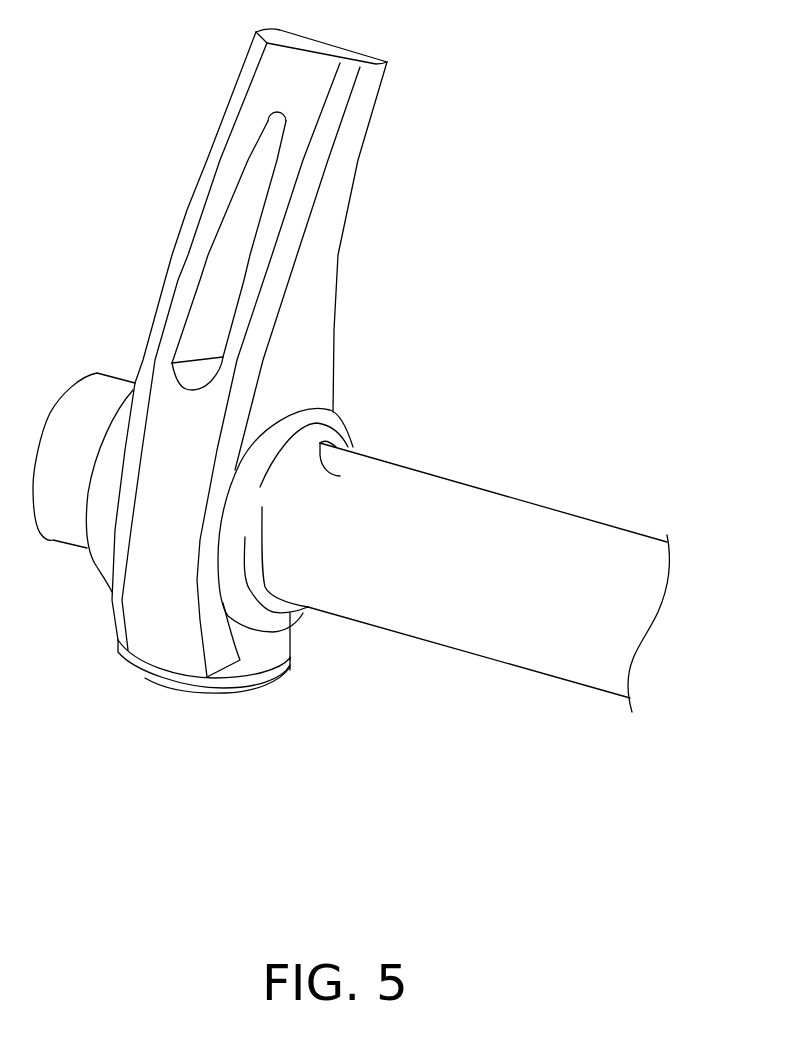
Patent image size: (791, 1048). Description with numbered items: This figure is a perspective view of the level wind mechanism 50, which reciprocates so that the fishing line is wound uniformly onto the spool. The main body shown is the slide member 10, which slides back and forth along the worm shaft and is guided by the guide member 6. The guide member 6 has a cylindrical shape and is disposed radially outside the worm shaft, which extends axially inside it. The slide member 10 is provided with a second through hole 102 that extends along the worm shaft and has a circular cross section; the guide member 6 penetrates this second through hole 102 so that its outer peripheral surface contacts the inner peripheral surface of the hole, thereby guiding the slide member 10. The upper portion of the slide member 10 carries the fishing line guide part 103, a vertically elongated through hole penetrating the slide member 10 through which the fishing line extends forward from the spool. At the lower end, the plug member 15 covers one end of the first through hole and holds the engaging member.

The level wind mechanism 50 is at (542, 175).
The slide member 10 is at (368, 175).
The fishing line guide part 103 is at (223, 253).
The second through hole 102 is at (340, 476).
The guide member 6 is at (503, 508).
The plug member 15 is at (208, 693).